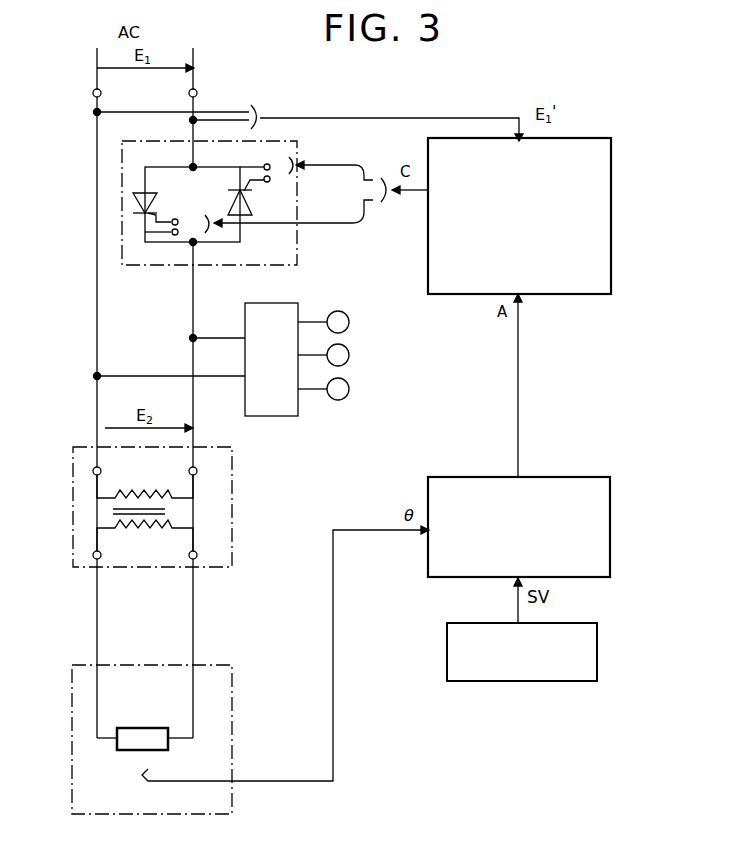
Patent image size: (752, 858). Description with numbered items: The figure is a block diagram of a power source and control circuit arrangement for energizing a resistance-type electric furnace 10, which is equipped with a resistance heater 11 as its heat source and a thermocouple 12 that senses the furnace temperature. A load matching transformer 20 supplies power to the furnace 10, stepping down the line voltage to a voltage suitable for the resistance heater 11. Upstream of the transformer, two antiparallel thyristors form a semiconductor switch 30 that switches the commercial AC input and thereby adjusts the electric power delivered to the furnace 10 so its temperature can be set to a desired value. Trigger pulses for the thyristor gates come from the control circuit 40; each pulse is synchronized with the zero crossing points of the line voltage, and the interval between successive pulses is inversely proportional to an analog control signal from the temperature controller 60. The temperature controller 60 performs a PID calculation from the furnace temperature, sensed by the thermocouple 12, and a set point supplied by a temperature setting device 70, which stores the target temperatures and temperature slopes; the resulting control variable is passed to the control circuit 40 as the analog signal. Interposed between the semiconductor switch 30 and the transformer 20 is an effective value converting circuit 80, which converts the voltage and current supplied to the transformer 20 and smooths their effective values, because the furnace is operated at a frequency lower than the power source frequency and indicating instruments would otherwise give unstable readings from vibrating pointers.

The electric furnace 10 is at (232, 690).
The resistance heater 11 is at (130, 728).
The thermocouple 12 is at (140, 782).
The load matching transformer 20 is at (232, 512).
The semiconductor switch 30 is at (291, 250).
The control circuit 40 is at (612, 258).
The temperature controller 60 is at (612, 543).
The temperature setting device 70 is at (598, 643).
The effective value converting circuit 80 is at (286, 410).